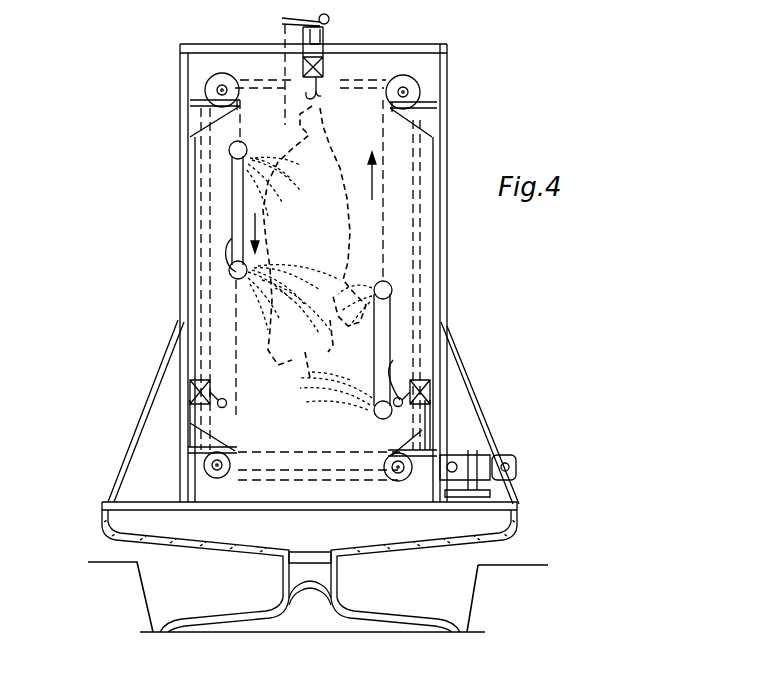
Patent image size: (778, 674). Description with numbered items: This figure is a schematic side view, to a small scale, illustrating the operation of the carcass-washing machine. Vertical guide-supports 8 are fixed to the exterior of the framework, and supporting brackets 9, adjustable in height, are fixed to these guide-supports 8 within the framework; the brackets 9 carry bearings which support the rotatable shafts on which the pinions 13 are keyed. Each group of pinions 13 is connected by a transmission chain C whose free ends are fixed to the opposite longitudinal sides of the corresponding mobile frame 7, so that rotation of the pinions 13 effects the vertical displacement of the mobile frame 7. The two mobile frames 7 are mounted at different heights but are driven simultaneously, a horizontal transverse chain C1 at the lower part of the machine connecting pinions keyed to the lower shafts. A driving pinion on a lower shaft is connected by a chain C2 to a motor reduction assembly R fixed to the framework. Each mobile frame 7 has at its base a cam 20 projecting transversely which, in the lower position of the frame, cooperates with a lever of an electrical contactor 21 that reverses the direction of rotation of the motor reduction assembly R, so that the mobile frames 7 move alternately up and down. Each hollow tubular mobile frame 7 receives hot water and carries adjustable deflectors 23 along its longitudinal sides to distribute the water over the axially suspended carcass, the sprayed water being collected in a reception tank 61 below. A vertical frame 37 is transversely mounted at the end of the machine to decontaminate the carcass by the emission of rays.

The mobile frame 7 is at (237, 222).
The vertical guide-support 8 is at (183, 186).
The supporting bracket 9 is at (205, 101).
The pinion 13 is at (215, 78).
The cam 20 is at (228, 247).
The electrical contactor 21 is at (190, 390).
The adjustable deflector 23 is at (233, 167).
The vertical frame 37 is at (368, 80).
The tank base 61 is at (326, 544).
The transmission chain C is at (235, 298).
The horizontal transverse chain C1 is at (272, 457).
The chain C2 is at (413, 477).
The motor reduction assembly R is at (514, 460).